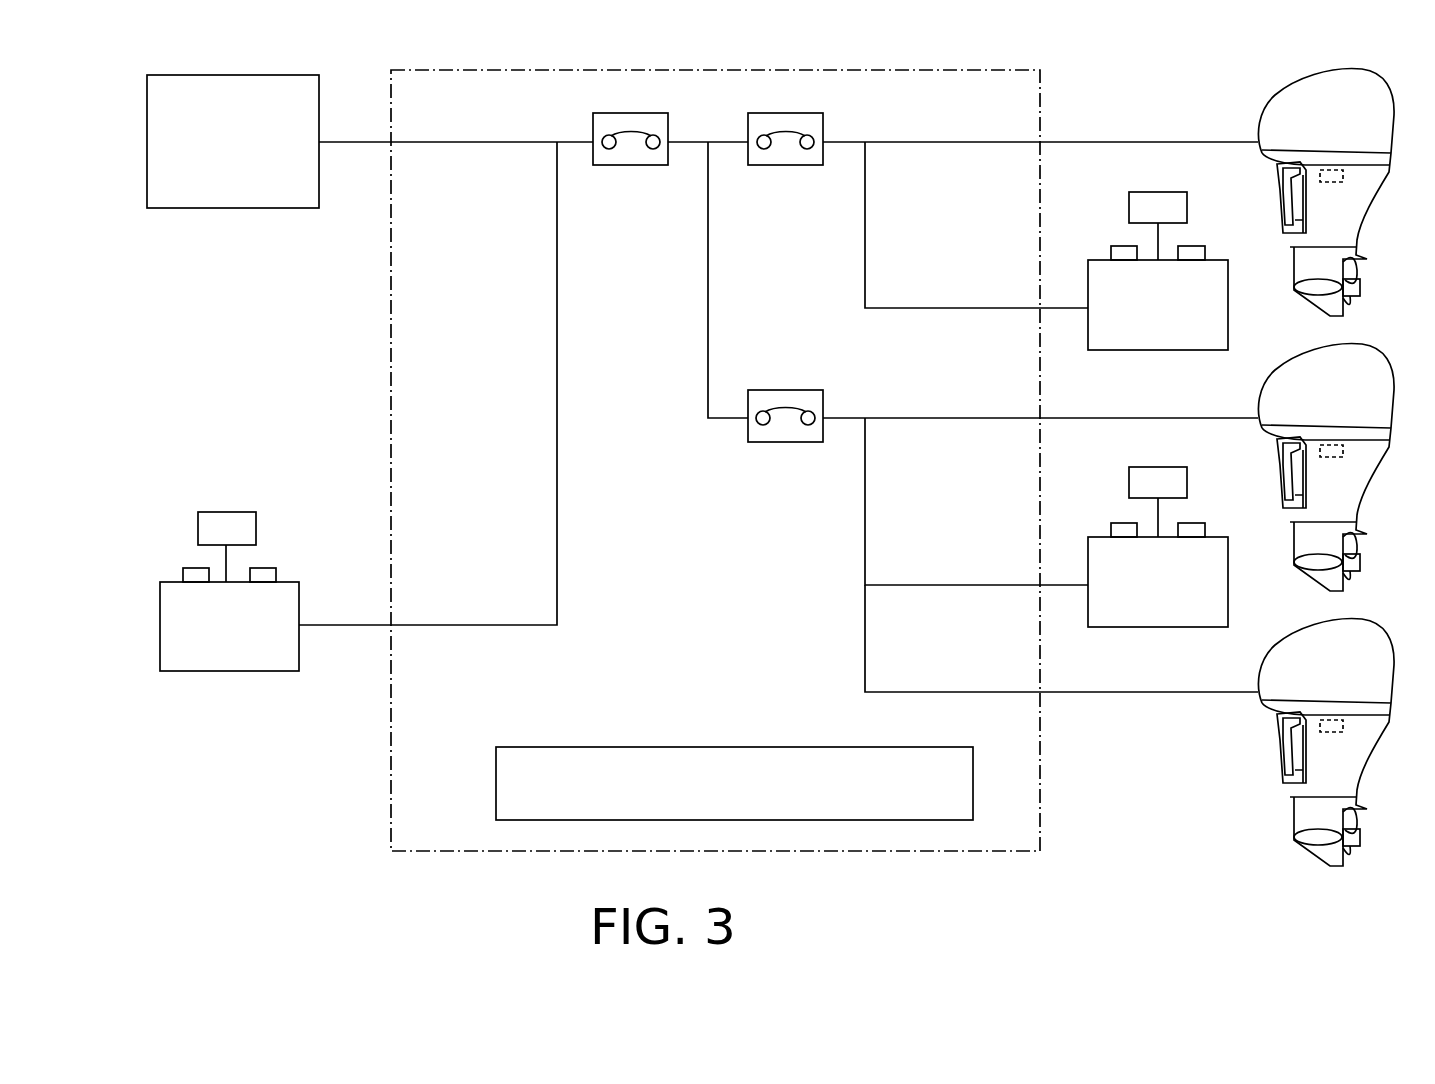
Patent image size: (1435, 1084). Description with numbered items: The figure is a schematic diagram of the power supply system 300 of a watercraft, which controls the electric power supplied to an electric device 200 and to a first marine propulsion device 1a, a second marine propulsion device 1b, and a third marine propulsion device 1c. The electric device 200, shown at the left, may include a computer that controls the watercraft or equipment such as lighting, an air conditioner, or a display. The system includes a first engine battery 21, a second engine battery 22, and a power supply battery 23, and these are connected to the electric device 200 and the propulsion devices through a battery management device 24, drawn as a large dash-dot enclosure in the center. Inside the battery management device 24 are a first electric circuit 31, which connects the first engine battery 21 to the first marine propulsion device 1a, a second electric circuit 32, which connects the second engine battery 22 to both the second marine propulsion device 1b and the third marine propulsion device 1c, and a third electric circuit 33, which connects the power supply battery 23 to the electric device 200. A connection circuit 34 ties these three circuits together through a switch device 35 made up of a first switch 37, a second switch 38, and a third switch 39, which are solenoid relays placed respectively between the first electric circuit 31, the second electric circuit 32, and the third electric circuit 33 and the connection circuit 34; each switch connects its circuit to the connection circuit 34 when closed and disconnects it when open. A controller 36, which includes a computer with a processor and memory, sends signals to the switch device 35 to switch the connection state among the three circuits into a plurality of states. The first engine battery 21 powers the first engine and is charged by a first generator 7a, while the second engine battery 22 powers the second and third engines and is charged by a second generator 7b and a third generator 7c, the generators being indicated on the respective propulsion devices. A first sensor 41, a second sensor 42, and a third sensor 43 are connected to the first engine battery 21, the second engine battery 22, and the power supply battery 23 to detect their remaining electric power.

The electric device 200 is at (233, 208).
The battery management device 24 is at (391, 375).
The switch device 35 is at (868, 120).
The third switch 39 is at (630, 165).
The first switch 37 is at (787, 165).
The second switch 38 is at (783, 442).
The first electric circuit 31 is at (965, 142).
The second electric circuit 32 is at (952, 418).
The third electric circuit 33 is at (557, 502).
The connection circuit 34 is at (708, 320).
The controller 36 is at (707, 747).
The first engine battery 21 is at (1228, 315).
The second engine battery 22 is at (1228, 595).
The power supply battery 23 is at (299, 645).
The first sensor 41 is at (1187, 207).
The second sensor 42 is at (1187, 483).
The third sensor 43 is at (256, 527).
The power supply system 300 is at (223, 748).
The first marine propulsion device 1a is at (1344, 172).
The second marine propulsion device 1b is at (1344, 446).
The third marine propulsion device 1c is at (1343, 720).
The first generator 7a is at (1345, 176).
The second generator 7b is at (1345, 451).
The third generator 7c is at (1345, 726).